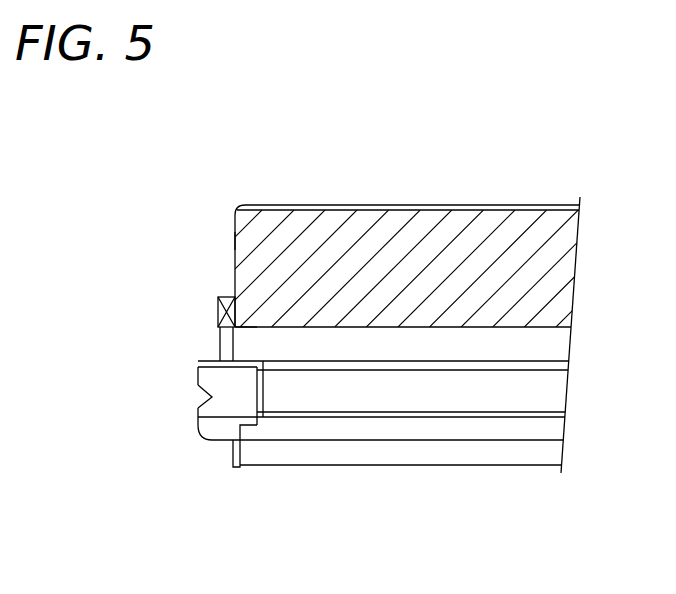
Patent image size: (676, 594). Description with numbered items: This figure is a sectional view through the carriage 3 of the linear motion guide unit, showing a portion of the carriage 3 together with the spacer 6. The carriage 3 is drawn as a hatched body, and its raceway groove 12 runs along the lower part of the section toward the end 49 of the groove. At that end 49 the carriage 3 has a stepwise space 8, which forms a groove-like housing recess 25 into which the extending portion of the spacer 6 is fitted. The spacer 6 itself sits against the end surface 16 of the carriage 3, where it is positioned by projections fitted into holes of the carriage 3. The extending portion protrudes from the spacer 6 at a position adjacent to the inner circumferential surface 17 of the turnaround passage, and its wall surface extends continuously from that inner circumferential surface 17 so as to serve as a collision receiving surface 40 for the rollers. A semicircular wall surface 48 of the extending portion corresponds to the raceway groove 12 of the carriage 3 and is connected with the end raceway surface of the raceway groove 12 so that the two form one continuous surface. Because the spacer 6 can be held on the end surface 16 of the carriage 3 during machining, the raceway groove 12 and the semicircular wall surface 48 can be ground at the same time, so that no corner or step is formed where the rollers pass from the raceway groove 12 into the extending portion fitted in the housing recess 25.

The carriage 3 is at (428, 200).
The end surface 16 is at (235, 240).
The housing recess 25 is at (217, 300).
The spacer 6 is at (220, 342).
The collision receiving surface 40 is at (250, 383).
The inner circumferential surface 17 is at (215, 398).
The semicircular wall surface 48 is at (237, 397).
The end 49 is at (240, 445).
The stepwise space 8 is at (242, 328).
The raceway groove 12 is at (402, 408).